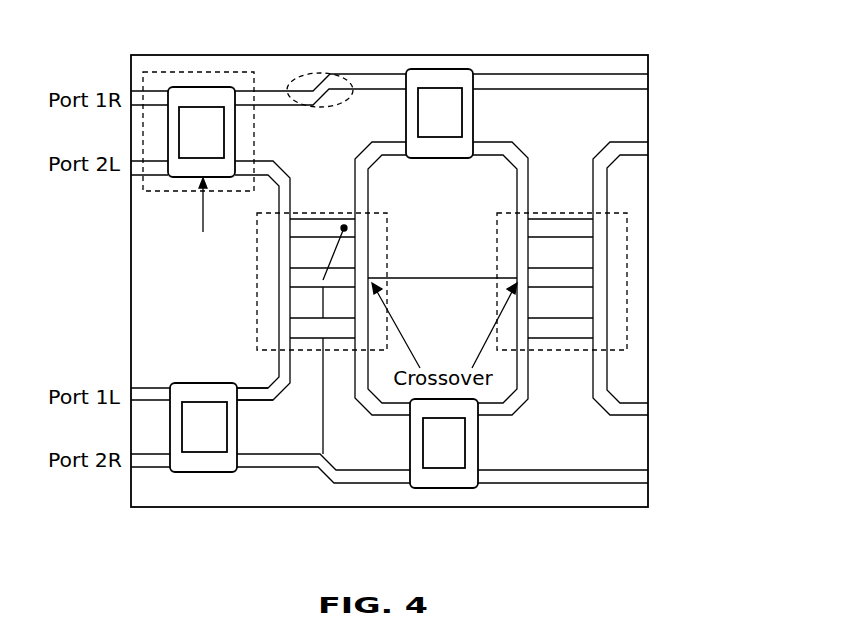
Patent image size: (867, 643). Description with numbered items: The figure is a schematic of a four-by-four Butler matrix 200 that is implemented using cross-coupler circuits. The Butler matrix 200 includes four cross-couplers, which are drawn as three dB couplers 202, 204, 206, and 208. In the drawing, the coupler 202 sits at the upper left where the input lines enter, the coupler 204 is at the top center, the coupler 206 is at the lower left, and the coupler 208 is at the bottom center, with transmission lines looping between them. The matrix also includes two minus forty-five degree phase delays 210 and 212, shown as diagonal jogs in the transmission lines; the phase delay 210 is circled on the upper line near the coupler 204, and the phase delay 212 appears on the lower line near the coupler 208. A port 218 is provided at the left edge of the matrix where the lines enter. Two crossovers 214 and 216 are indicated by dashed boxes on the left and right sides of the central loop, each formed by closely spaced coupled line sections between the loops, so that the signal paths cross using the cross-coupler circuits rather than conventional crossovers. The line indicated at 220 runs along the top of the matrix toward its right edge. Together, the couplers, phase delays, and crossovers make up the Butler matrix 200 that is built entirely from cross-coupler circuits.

The Butler matrix 200 is at (138, 51).
The 3 dB coupler 202 is at (205, 70).
The 3 dB coupler 204 is at (440, 80).
The 3 dB coupler 206 is at (209, 473).
The 3 dB coupler 208 is at (443, 477).
The -45° phase delay 210 is at (330, 77).
The -45° phase delay 212 is at (318, 468).
The crossover 214 is at (257, 285).
The crossover 216 is at (555, 212).
The port 218 is at (137, 97).
The output transmission line 220 is at (638, 81).